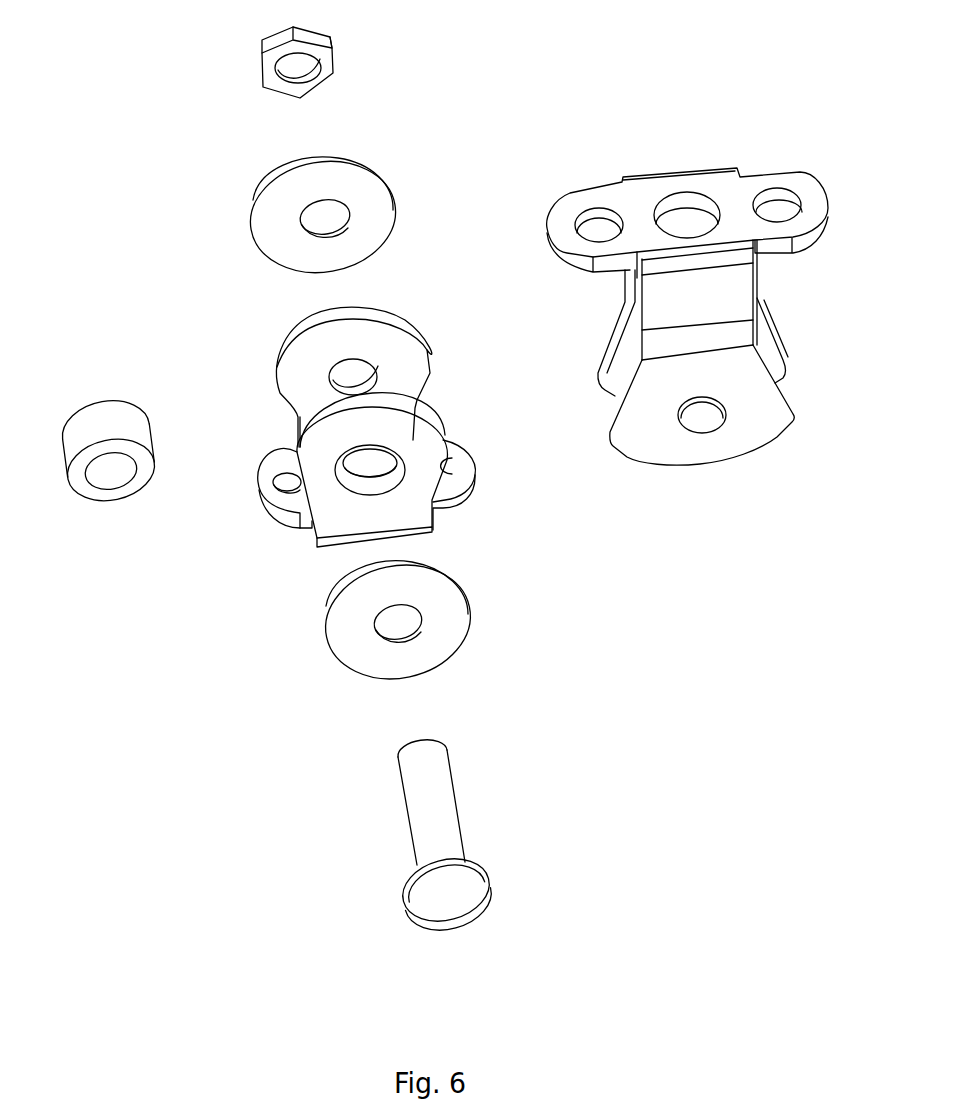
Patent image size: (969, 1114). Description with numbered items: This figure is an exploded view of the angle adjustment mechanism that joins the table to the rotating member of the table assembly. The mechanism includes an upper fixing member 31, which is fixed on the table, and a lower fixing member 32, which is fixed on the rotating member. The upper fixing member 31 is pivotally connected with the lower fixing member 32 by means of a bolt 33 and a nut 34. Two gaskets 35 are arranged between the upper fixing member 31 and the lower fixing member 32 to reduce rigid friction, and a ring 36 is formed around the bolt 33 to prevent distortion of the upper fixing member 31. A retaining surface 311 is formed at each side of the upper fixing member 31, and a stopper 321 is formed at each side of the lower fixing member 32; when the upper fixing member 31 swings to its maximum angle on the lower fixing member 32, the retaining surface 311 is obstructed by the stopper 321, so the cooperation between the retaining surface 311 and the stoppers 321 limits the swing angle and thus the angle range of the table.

The upper fixing member 31 is at (701, 298).
The retaining surface 311 is at (636, 462).
The lower fixing member 32 is at (357, 427).
The stopper 321 is at (265, 492).
The bolt 33 is at (445, 817).
The nut 34 is at (328, 65).
The gasket 35 is at (270, 222).
The ring 36 is at (105, 410).